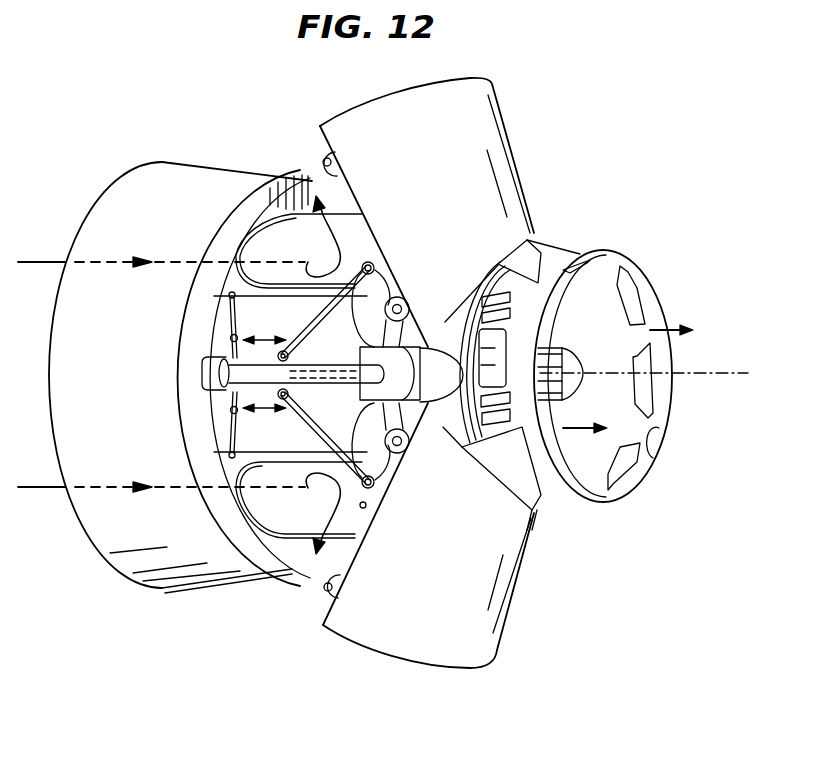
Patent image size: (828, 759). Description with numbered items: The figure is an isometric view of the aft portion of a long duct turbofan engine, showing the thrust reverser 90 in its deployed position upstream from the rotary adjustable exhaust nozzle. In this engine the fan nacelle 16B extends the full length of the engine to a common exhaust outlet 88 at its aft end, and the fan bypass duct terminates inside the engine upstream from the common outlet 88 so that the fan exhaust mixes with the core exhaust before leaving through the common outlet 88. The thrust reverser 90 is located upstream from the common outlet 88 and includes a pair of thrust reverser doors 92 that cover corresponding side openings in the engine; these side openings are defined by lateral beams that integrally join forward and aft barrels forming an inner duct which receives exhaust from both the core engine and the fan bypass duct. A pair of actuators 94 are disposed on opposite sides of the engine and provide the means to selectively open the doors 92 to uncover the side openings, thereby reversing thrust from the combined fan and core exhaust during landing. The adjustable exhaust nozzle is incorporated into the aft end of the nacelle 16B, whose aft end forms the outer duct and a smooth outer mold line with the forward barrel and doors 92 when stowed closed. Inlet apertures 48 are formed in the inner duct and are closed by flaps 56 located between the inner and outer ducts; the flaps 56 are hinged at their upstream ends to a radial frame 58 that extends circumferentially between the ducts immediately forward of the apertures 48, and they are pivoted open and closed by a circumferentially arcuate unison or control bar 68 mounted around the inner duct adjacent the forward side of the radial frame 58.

The fan nacelle 16B is at (193, 585).
The thrust reverser 90 is at (270, 126).
The thrust reverser doors 92 is at (443, 199).
The actuators 94 is at (250, 377).
The control bar 68 is at (458, 450).
The radial frame 58 is at (510, 330).
The common exhaust outlet 88 is at (668, 433).
The inlet apertures 48 is at (638, 292).
The flaps 56 is at (645, 362).